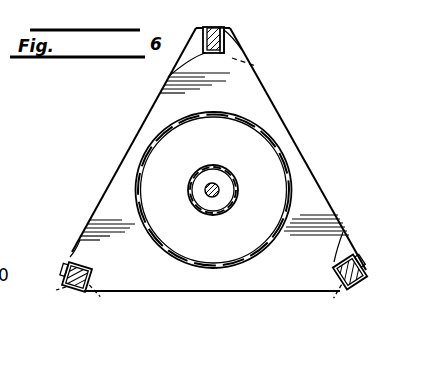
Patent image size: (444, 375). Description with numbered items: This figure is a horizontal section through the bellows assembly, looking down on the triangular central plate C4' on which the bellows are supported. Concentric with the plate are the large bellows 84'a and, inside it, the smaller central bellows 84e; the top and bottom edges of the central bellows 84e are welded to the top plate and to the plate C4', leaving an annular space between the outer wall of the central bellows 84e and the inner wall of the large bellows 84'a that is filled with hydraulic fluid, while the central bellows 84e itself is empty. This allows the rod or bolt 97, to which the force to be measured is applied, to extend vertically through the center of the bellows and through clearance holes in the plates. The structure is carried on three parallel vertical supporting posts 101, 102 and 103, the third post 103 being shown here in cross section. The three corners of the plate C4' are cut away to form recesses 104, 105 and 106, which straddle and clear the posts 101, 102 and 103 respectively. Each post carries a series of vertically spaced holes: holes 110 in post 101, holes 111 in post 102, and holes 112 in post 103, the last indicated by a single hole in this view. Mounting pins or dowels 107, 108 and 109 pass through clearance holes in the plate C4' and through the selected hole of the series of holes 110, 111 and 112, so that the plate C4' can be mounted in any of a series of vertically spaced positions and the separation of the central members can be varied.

The central plate C4' is at (218, 159).
The large bellows 84'a is at (238, 187).
The central bellows 84e is at (215, 166).
The rod or bolt 97 is at (220, 189).
The vertical supporting post 101 is at (80, 290).
The vertical supporting post 102 is at (352, 292).
The supporting post 103 is at (216, 27).
The recess 104 is at (81, 240).
The recess 105 is at (343, 232).
The recess 106 is at (168, 76).
The mounting pin or dowel 107 is at (66, 266).
The mounting pin or dowel 108 is at (366, 257).
The mounting pin or dowel 109 is at (226, 36).
The vertically spaced holes 110 is at (56, 290).
The vertically spaced holes 111 is at (355, 283).
The vertically spaced holes 112 is at (257, 66).